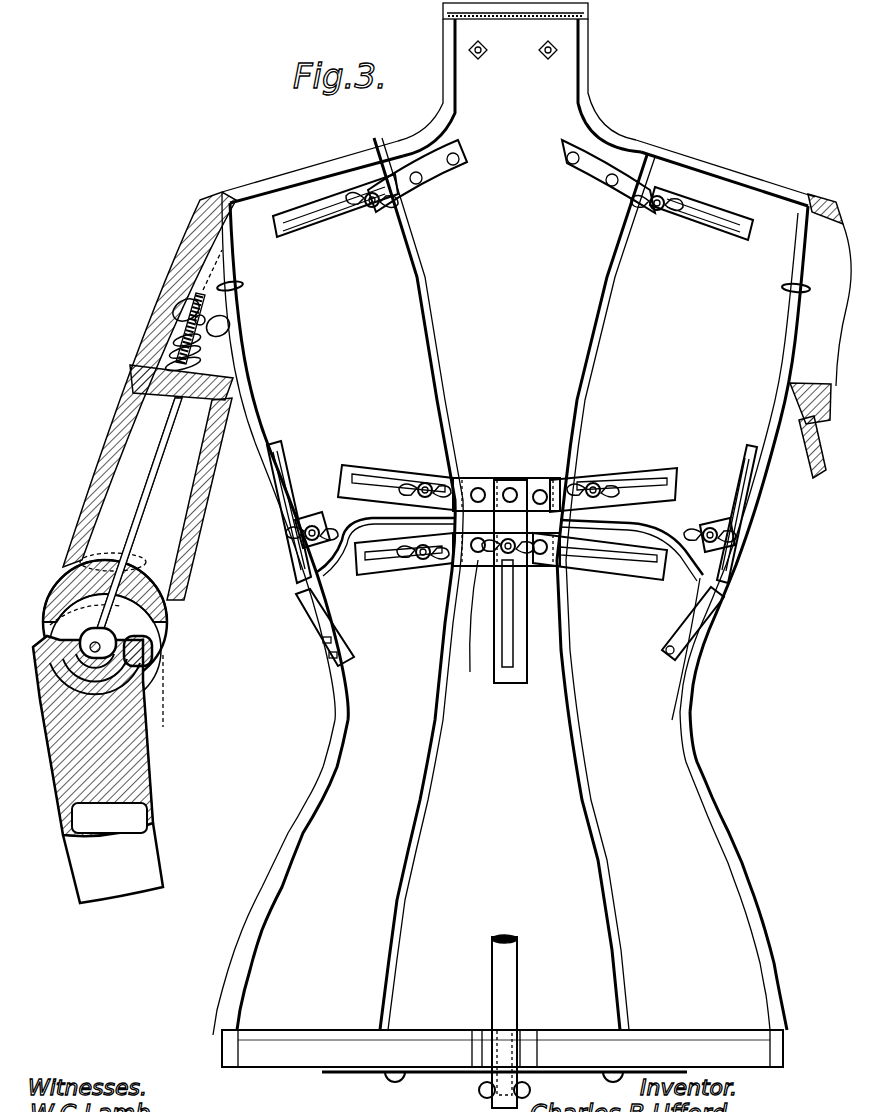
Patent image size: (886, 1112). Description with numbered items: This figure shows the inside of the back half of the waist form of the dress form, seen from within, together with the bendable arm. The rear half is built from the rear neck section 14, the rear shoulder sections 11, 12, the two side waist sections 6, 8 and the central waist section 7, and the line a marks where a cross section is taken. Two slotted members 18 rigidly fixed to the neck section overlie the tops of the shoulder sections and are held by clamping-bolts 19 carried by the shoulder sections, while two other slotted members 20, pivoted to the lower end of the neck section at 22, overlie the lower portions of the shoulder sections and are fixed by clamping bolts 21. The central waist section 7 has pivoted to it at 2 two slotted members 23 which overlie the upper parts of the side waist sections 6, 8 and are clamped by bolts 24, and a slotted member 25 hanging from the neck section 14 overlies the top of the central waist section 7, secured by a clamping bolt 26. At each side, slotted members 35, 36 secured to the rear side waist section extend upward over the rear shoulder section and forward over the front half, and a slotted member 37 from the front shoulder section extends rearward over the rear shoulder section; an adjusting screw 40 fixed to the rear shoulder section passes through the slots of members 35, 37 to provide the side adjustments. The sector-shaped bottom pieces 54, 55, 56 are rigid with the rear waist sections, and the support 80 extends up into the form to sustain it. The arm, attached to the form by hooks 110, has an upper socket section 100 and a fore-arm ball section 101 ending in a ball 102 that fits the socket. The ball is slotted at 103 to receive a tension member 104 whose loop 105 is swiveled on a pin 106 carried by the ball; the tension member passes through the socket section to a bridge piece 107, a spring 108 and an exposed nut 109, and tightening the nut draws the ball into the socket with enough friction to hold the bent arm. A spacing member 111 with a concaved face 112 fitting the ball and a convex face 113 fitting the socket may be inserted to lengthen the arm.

The section line a- a is at (377, 147).
The pivot 2 is at (470, 563).
The waist section 6 is at (280, 877).
The central waist section 7 is at (562, 795).
The waist section 8 is at (716, 871).
The rear shoulder section 11 is at (312, 430).
The rear shoulder section 12 is at (725, 426).
The rear neck section 14 is at (526, 281).
The slotted member 18 is at (313, 236).
The clamping-bolt 19 is at (373, 212).
The slotted member 20 is at (447, 480).
The clamping bolt 21 is at (430, 478).
The pivot 22 is at (480, 490).
The slotted member 23 is at (452, 565).
The clamping bolt 24 is at (423, 563).
The slotted member 25 is at (513, 482).
The clamping bolt 26 is at (493, 594).
The slotted member 35 is at (312, 598).
The slotted member 36 is at (340, 660).
The slotted member 37 is at (298, 552).
The adjusting screw 40 is at (312, 528).
The bottom piece 54 is at (268, 1067).
The bottom piece 55 is at (492, 1030).
The bottom piece 56 is at (688, 1040).
The rod, tube or other support 80 is at (519, 967).
The socket section 100 is at (112, 420).
The ball section 101 is at (140, 776).
The ball 102 is at (150, 660).
The slot 103 is at (150, 678).
The tension member 104 is at (150, 483).
The loop 105 is at (150, 714).
The pin 106 is at (150, 700).
The bridge piece 107 is at (140, 368).
The spring 108 is at (178, 338).
The nut 109 is at (190, 310).
The hooks 110 is at (243, 288).
The spacing member 111 is at (165, 629).
The concaved face 112 is at (165, 607).
The convex face 113 is at (145, 565).